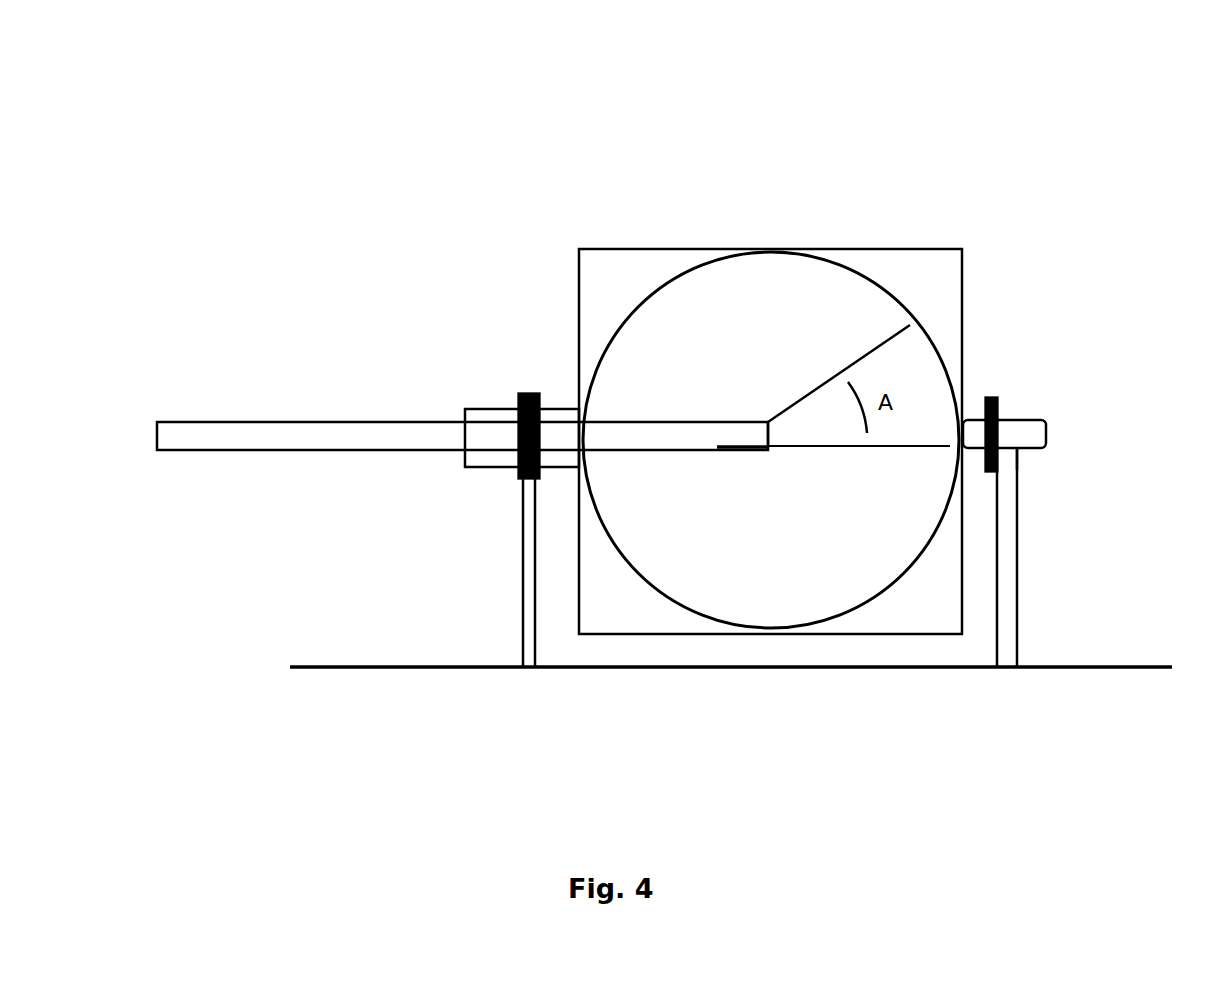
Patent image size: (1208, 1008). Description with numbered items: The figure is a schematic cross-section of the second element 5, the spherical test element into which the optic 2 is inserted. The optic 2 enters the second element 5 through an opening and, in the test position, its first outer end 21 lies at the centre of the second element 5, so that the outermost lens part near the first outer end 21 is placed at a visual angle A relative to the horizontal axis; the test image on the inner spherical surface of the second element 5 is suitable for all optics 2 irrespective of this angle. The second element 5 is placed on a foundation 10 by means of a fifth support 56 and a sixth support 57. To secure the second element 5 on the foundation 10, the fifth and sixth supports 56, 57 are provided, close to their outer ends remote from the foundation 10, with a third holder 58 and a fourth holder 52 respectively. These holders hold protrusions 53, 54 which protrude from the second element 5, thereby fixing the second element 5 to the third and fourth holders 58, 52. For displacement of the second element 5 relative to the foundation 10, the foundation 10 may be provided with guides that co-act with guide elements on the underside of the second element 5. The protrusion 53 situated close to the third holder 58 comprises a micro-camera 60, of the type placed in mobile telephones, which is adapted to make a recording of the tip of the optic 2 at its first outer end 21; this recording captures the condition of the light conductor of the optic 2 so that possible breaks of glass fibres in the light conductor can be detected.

The optic 2 is at (207, 432).
The second element 5 is at (868, 165).
The foundation 10 is at (610, 679).
The first outer end 21 is at (767, 410).
The fourth holder 52 is at (992, 378).
The protrusion 53 is at (1030, 392).
The protrusion 54 is at (483, 402).
The fifth support 56 is at (527, 605).
The sixth support 57 is at (1012, 611).
The third holder 58 is at (527, 380).
The micro-camera 60 is at (1031, 452).